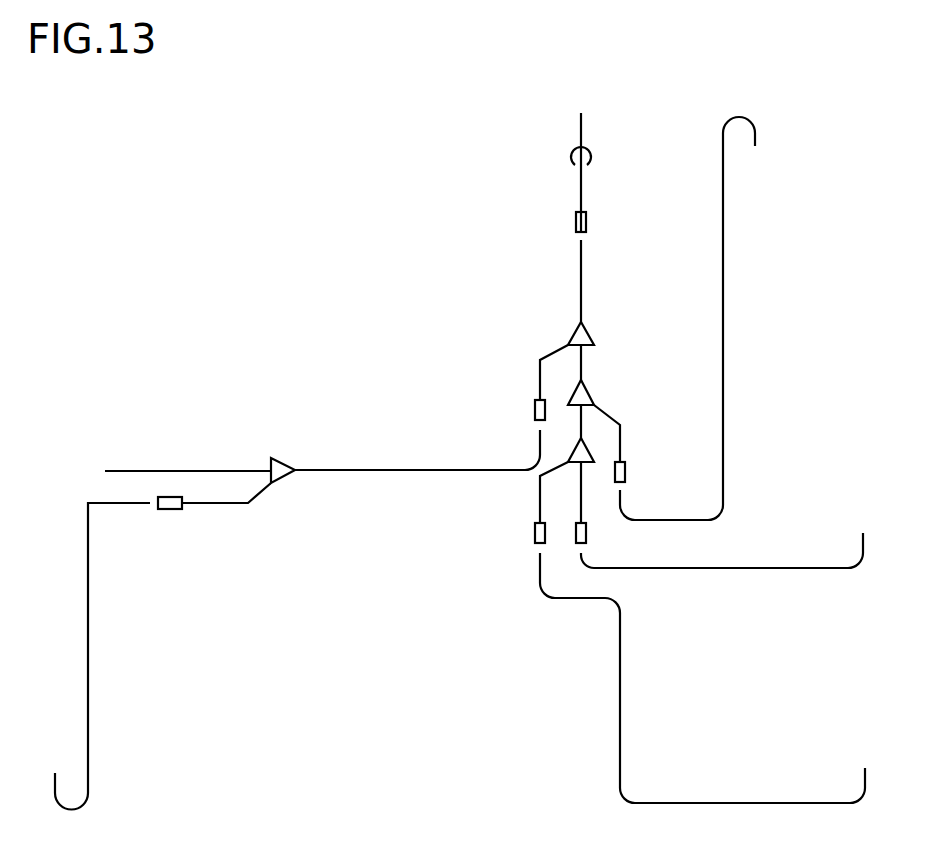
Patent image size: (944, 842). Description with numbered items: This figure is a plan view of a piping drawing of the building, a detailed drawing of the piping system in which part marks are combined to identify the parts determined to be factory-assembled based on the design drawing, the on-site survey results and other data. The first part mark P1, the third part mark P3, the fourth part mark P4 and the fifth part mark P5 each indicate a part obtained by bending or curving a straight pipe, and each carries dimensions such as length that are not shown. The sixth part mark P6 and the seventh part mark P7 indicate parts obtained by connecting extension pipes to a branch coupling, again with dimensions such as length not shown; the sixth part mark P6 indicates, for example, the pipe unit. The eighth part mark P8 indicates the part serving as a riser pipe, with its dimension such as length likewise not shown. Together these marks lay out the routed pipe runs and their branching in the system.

The first part mark P1 is at (78, 597).
The third part mark P3 is at (610, 678).
The fourth part mark P4 is at (738, 578).
The fifth part mark P5 is at (734, 368).
The sixth part mark P6 is at (370, 460).
The seventh part mark P7 is at (571, 307).
The eighth part mark P8 is at (571, 131).